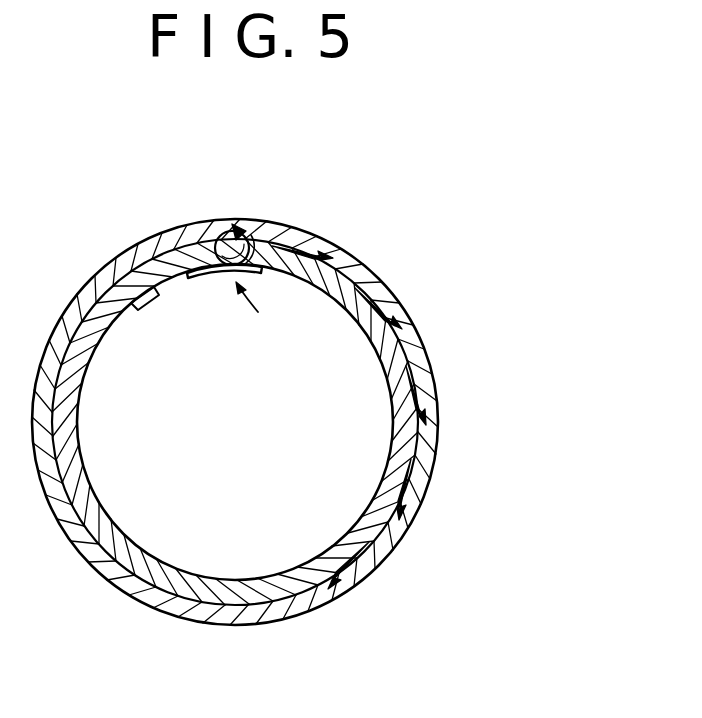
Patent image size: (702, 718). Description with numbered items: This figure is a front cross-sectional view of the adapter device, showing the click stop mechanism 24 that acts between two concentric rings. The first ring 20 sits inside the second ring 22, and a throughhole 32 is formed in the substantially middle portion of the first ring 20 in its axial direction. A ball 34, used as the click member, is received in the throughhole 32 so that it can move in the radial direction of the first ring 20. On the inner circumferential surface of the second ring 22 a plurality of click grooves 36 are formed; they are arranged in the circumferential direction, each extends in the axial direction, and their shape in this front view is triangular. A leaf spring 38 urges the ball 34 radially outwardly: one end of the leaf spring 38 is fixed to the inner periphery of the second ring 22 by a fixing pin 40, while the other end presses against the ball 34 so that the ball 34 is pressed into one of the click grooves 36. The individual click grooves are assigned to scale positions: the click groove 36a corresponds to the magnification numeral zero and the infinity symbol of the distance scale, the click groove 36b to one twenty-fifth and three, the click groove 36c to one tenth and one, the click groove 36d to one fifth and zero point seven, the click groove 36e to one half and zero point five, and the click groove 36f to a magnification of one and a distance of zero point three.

The first ring 20 is at (362, 527).
The second ring 22 is at (420, 376).
The click stop mechanism 24 is at (260, 310).
The throughhole 32 is at (270, 256).
The ball 34 is at (221, 238).
The click grooves 36 is at (395, 387).
The click groove 36a is at (219, 232).
The click groove 36b is at (340, 257).
The click groove 36c is at (396, 322).
The click groove 36d is at (426, 418).
The click groove 36e is at (404, 512).
The click groove 36f is at (336, 586).
The leaf spring 38 is at (210, 277).
The fixing pin 40 is at (148, 309).